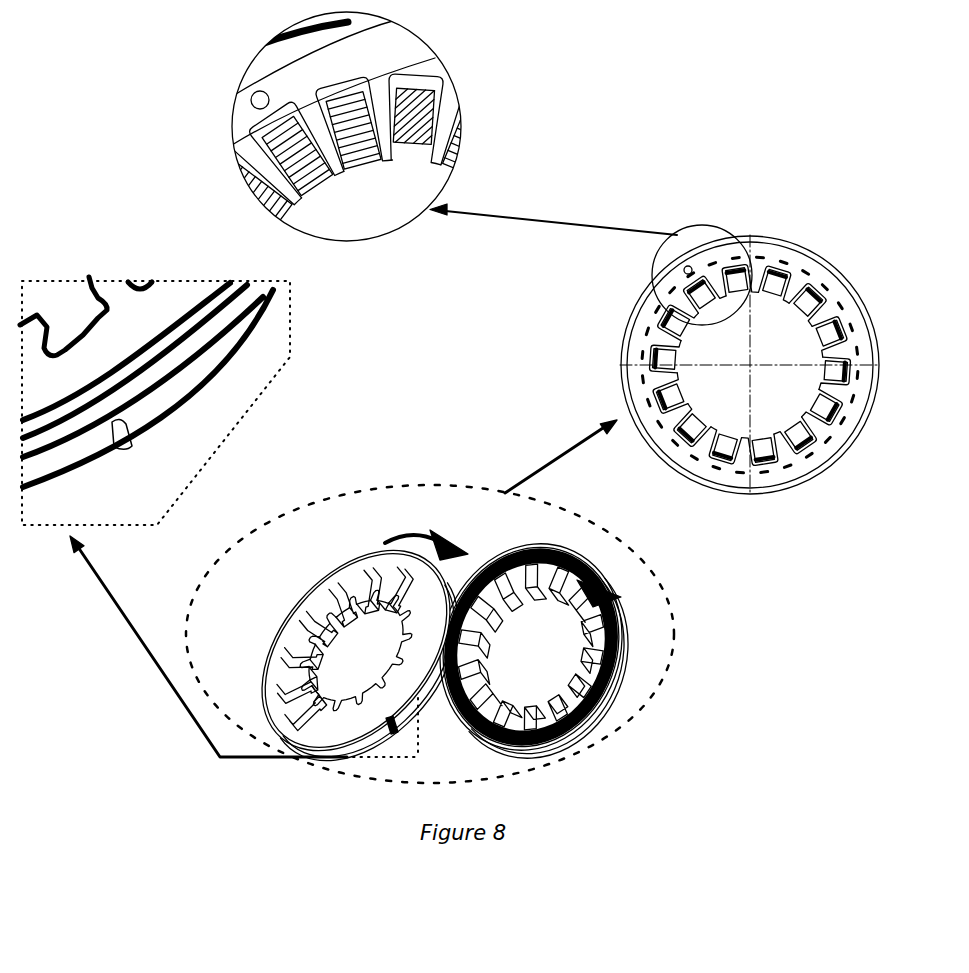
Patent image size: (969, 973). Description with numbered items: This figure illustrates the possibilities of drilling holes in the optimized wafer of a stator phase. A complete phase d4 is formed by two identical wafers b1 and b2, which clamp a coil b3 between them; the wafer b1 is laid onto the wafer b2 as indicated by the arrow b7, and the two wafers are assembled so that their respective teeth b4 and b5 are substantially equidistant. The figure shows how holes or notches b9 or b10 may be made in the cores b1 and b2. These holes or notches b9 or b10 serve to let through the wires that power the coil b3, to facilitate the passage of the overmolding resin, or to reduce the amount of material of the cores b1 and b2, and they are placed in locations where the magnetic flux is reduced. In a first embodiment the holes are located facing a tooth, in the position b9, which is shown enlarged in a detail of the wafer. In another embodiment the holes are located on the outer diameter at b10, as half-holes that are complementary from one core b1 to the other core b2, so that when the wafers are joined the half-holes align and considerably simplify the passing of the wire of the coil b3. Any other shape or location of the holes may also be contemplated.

The wafer b1 is at (628, 357).
The wafer b2 is at (399, 48).
The coil b3 is at (826, 285).
The teeth b4 is at (358, 148).
The teeth b5 is at (421, 118).
The arrow b7 is at (390, 541).
The holes or notches b9 is at (690, 266).
The holes or notches b10 is at (397, 727).
The phase d4 is at (304, 507).